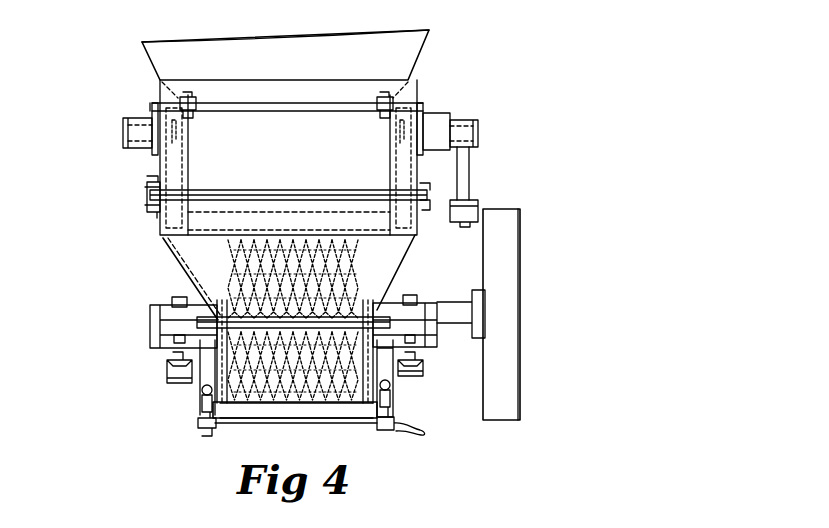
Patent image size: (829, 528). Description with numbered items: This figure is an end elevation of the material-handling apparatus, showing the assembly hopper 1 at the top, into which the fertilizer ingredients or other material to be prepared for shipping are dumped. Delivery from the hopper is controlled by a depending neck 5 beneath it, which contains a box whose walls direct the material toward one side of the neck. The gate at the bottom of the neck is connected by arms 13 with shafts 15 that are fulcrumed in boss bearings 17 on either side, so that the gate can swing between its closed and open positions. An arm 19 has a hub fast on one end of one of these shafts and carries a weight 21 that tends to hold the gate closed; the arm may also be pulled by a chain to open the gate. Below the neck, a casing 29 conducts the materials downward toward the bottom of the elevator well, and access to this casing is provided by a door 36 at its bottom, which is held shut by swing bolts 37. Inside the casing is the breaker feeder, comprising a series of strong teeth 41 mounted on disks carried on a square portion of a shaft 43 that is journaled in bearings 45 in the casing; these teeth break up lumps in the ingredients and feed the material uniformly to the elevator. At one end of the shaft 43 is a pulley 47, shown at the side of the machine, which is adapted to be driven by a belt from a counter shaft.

The assembly hopper 1 is at (410, 56).
The depending neck 5 is at (200, 153).
The arms 13 is at (178, 182).
The shafts 15 is at (123, 137).
The boss bearings 17 is at (138, 119).
The arm 19 is at (470, 156).
The weight 21 is at (476, 205).
The casing 29 is at (386, 262).
The door 36 is at (262, 420).
The swing bolts 37 is at (198, 419).
The teeth 41 is at (240, 287).
The shaft 43 is at (460, 323).
The bearings 45 is at (155, 340).
The pulley 47 is at (507, 235).